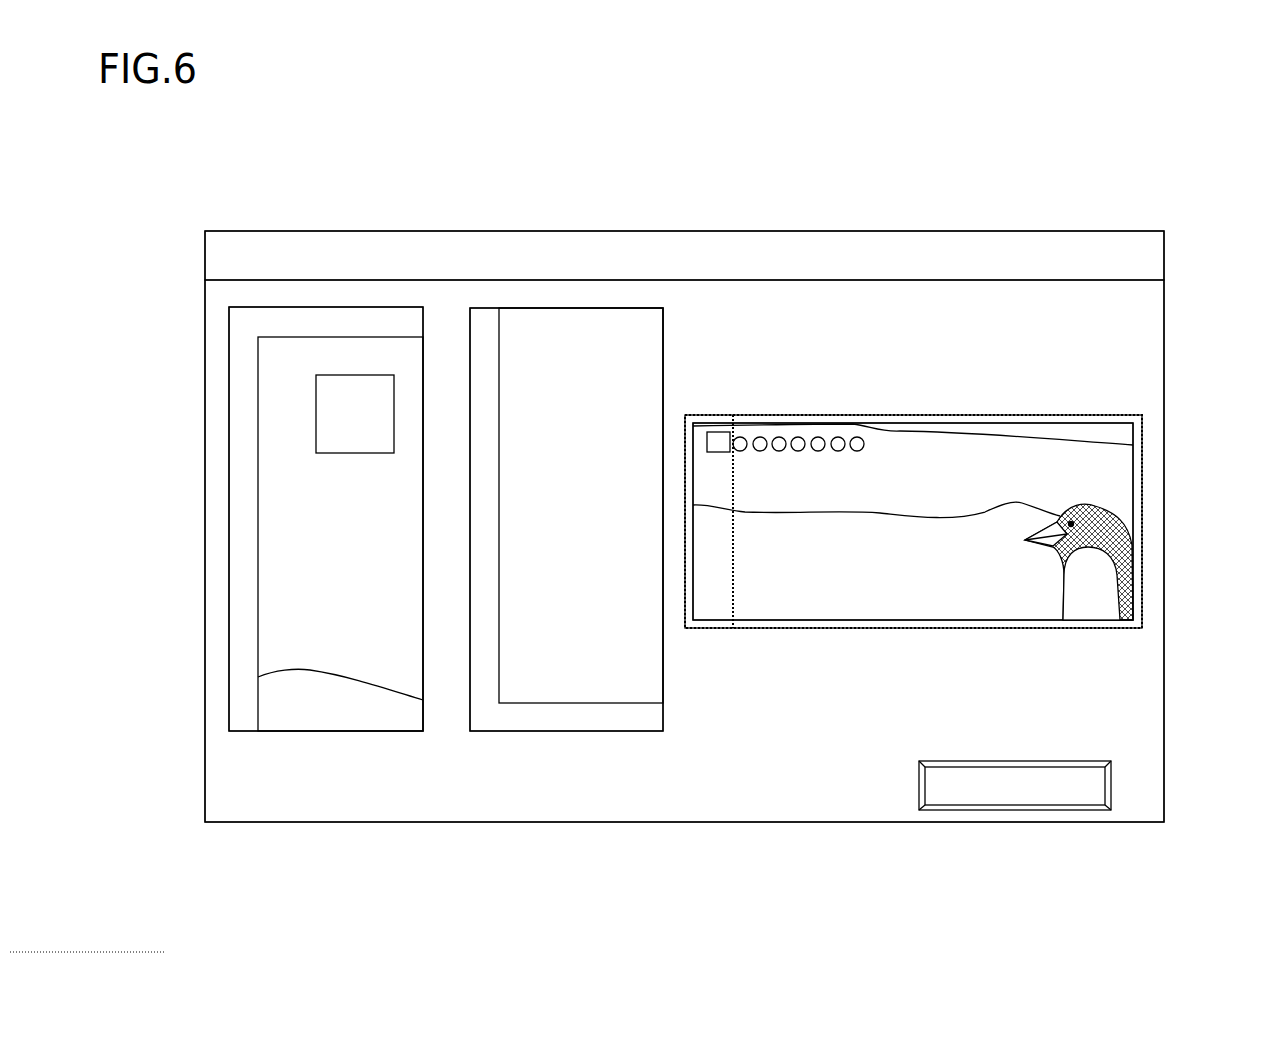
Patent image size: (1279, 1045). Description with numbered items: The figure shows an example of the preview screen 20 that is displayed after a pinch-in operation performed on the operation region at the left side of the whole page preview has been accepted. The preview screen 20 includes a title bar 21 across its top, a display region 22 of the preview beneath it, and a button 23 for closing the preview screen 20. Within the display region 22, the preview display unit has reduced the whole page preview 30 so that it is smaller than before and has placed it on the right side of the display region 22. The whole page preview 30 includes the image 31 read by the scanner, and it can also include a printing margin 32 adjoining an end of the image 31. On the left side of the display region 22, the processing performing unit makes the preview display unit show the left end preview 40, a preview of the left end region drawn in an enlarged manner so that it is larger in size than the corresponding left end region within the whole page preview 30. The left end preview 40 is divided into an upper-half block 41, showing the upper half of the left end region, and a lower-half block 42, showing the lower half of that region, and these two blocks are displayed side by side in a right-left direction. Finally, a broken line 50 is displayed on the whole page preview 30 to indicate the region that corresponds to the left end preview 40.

The preview screen 20 is at (330, 207).
The title bar 21 is at (1108, 259).
The display region 22 is at (1127, 300).
The button 23 is at (1082, 785).
The whole page preview 30 is at (931, 407).
The image 31 is at (403, 410).
The printing margin 32 is at (245, 424).
The left end preview 40 is at (245, 297).
The upper-half block 41 is at (247, 380).
The lower-half block 42 is at (512, 718).
The broken line 50 is at (709, 413).